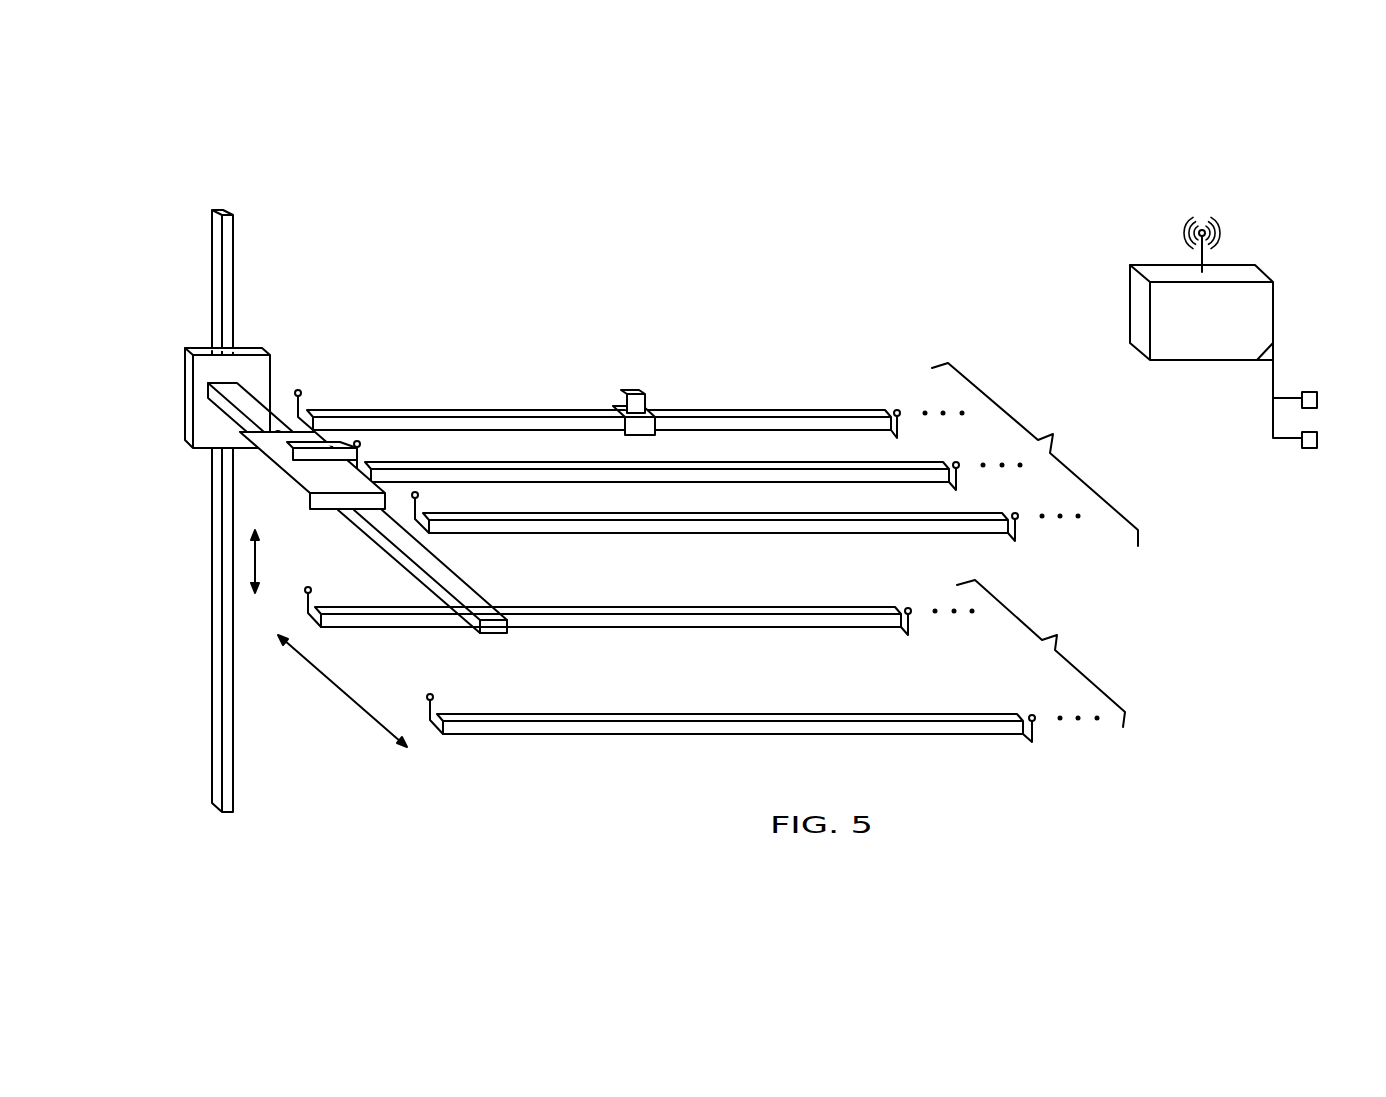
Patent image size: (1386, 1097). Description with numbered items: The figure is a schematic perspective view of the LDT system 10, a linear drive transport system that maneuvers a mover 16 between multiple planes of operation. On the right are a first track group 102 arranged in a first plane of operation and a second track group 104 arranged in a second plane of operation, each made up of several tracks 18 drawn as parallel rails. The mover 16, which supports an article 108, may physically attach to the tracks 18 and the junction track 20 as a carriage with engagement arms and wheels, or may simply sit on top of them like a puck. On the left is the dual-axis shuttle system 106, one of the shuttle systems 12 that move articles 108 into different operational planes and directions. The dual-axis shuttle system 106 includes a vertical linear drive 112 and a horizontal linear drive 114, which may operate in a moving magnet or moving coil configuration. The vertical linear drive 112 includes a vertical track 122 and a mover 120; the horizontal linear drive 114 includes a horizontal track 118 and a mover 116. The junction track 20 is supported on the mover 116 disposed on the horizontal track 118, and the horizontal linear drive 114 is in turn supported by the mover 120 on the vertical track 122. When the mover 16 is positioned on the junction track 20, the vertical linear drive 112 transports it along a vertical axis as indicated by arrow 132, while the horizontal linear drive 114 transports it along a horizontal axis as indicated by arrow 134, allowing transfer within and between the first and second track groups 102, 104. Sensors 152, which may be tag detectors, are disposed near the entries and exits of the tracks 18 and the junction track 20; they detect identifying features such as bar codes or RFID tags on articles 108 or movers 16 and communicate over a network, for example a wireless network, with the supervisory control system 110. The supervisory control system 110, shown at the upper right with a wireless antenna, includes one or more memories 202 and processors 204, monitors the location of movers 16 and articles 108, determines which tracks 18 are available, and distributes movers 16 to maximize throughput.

The LDT system 10 is at (608, 223).
The shuttle system 12 is at (145, 305).
The mover 16 is at (650, 425).
The tracks 18 is at (458, 410).
The junction track 20 is at (314, 455).
The first track group 102 is at (1035, 454).
The second track group 104 is at (1041, 653).
The dual-axis shuttle system 106 is at (198, 460).
The article 108 is at (633, 391).
The supervisory control system 110 is at (1210, 362).
The vertical linear drive 112 is at (200, 335).
The horizontal linear drive 114 is at (332, 527).
The mover 116 is at (259, 463).
The horizontal track 118 is at (478, 597).
The mover 120 is at (185, 397).
The vertical track 122 is at (211, 718).
The arrow 132 is at (252, 558).
The arrow 134 is at (338, 692).
The sensors 152 is at (356, 440).
The memories 202 is at (1317, 440).
The processors 204 is at (1317, 400).